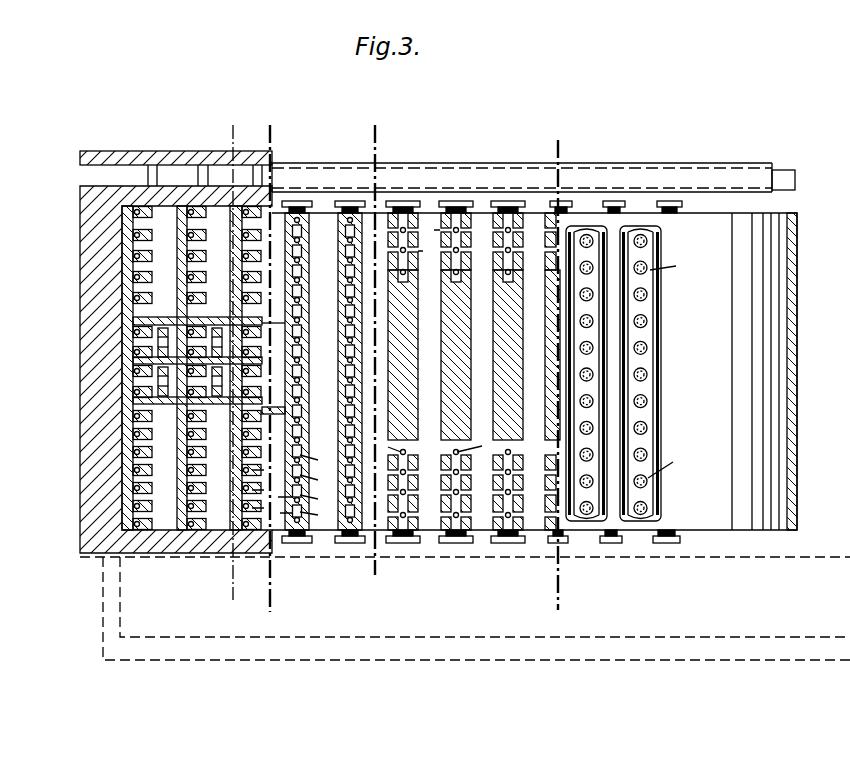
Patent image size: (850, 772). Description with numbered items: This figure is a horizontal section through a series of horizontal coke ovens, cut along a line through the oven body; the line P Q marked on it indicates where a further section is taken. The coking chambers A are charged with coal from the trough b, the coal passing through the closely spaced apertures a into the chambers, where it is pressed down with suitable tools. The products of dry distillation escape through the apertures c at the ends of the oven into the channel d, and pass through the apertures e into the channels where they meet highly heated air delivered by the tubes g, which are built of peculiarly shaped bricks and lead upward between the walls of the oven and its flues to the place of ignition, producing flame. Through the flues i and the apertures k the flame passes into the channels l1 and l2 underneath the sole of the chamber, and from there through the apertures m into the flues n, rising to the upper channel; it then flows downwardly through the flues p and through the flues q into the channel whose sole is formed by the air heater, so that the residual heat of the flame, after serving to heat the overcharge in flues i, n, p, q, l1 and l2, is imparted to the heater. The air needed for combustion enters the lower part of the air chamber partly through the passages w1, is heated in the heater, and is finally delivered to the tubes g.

The passages w1 is at (258, 176).
The section line P Q P is at (232, 358).
The channel l1 is at (197, 255).
The channel l2 is at (158, 675).
The apertures m is at (200, 378).
The flues q is at (199, 360).
The flues p is at (306, 412).
The flues n is at (316, 431).
The flues i is at (318, 690).
The apertures k is at (258, 490).
The tubes g is at (279, 503).
The chambers A is at (473, 372).
The channel d is at (546, 462).
The apertures c is at (450, 367).
The apertures e is at (433, 444).
The trough b is at (648, 283).
The apertures a is at (668, 368).
The section line P Q is at (465, 608).